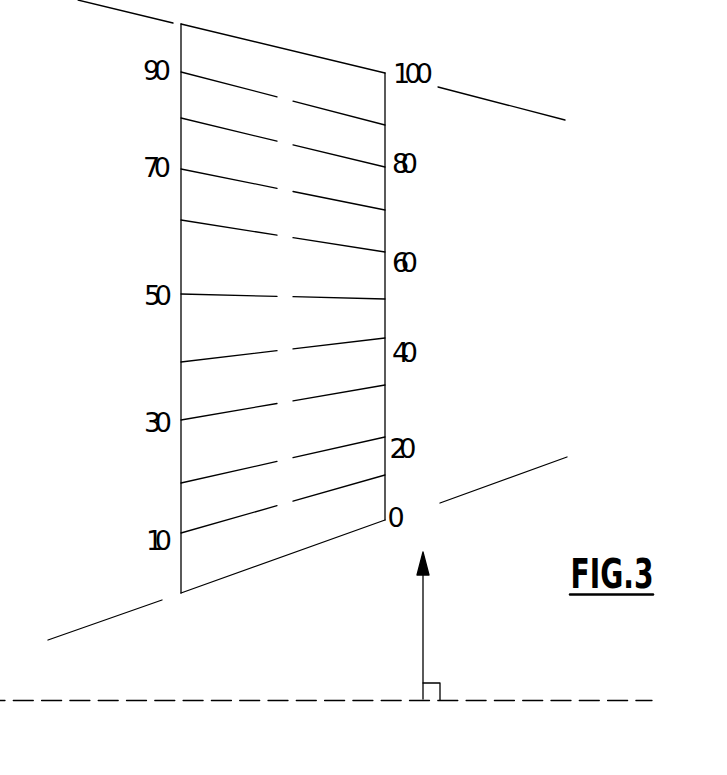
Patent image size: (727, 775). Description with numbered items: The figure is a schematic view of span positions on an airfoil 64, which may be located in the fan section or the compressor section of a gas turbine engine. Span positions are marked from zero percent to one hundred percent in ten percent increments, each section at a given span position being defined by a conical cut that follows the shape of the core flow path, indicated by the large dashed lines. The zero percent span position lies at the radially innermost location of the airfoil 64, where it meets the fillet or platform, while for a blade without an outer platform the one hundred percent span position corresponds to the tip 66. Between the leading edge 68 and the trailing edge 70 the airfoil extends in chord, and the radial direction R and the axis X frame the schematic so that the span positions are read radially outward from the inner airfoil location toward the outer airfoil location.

The airfoil 64 is at (299, 304).
The tip 66 is at (278, 47).
The leading edge 68 is at (181, 243).
The trailing edge 70 is at (385, 284).
The radial axis arrow R is at (423, 637).
The axis line X is at (221, 700).